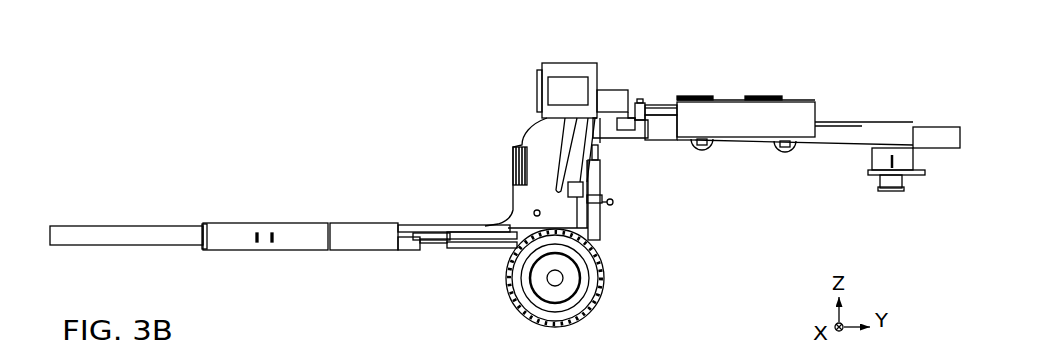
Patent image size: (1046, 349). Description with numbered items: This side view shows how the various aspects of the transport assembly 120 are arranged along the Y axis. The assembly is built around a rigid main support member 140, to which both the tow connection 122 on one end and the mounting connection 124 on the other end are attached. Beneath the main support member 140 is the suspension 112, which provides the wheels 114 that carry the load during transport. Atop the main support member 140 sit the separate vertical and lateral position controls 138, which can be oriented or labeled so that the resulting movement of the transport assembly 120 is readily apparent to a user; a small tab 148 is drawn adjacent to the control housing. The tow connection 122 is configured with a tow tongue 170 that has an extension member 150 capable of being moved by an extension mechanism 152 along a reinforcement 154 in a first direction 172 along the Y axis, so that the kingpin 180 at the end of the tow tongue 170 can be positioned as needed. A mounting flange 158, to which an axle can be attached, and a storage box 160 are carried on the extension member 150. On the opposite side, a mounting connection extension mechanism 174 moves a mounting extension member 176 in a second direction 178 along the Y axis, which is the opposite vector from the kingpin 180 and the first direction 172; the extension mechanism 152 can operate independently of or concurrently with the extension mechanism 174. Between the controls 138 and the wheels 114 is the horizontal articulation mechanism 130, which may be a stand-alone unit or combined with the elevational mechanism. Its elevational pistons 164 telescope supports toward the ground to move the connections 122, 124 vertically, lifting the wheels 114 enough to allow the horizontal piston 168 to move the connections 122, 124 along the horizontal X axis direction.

The suspension 112 is at (545, 285).
The wheels 114 is at (600, 293).
The transport assembly 120 is at (348, 57).
The tow connection 122 is at (908, 97).
The mounting connection 124 is at (237, 192).
The horizontal articulation mechanism 130 is at (613, 182).
The position controls 138 is at (570, 80).
The main support member 140 is at (550, 207).
The housing tab 148 is at (539, 70).
The extension member 150 is at (832, 147).
The extension mechanism 152 is at (662, 100).
The reinforcement 154 is at (947, 127).
The mounting flange 158 is at (772, 157).
The storage boxes 160 is at (758, 130).
The elevational pistons 164 is at (592, 223).
The horizontal piston 168 is at (620, 202).
The tow tongue 170 is at (860, 112).
The first direction 172 is at (762, 252).
The extension mechanism 174 is at (437, 246).
The mounting extension member 176 is at (258, 262).
The second direction 178 is at (62, 189).
The kingpin 180 is at (889, 197).